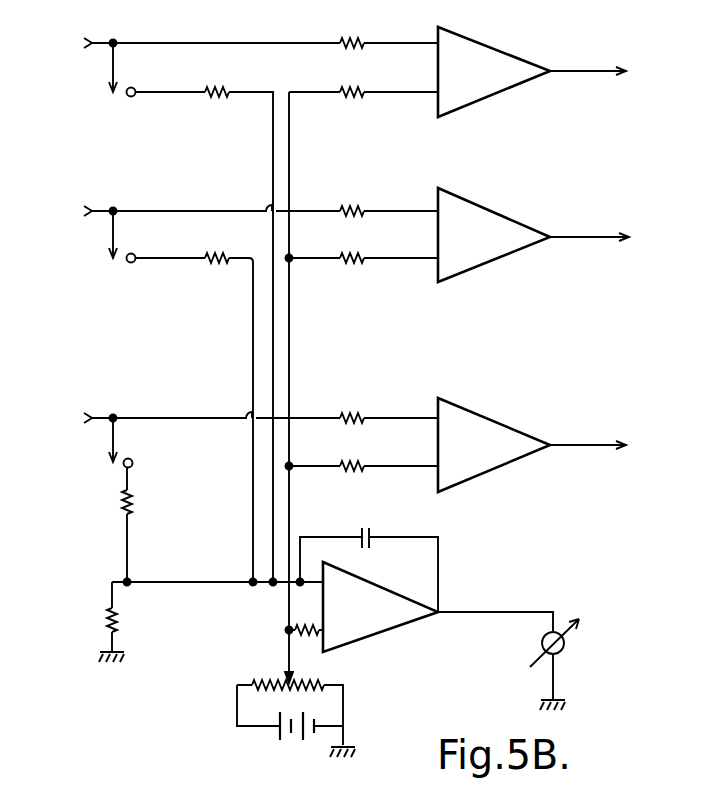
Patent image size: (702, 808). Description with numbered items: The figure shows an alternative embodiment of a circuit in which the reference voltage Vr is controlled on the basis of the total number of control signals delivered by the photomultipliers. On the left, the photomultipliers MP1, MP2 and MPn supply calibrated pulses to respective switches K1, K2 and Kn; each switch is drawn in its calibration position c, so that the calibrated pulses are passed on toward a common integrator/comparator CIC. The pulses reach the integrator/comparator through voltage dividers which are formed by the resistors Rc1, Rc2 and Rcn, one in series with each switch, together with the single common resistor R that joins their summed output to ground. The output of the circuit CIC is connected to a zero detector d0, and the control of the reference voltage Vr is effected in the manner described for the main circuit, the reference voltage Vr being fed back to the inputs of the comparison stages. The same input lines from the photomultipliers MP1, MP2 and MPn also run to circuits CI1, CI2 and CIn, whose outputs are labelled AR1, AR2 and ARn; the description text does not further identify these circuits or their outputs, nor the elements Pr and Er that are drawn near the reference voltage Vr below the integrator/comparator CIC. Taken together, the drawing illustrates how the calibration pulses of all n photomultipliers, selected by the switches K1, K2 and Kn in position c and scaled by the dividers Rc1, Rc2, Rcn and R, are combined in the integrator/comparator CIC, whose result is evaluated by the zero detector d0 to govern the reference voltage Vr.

The photomultiplier MP1 is at (236, 38).
The switch K1 is at (128, 67).
The calibration position c is at (130, 188).
The resistor Rc1 is at (204, 334).
The comparator 1 CI1 is at (419, 66).
The alarm output 1 AR1 is at (595, 85).
The photomultiplier MP2 is at (231, 208).
The switch K2 is at (128, 234).
The resistor Rc2 is at (194, 417).
The comparator 2 CI2 is at (418, 231).
The alarm output 2 AR2 is at (594, 252).
The photomultiplier MPn is at (226, 418).
The switch Kn is at (128, 443).
The resistor Rcn is at (152, 525).
The comparator n CIn is at (418, 440).
The alarm output n ARn is at (595, 461).
The resistor R is at (120, 622).
The integrator/comparator CIC is at (369, 607).
The reference voltage Vr is at (292, 656).
The reference potentiometer Pr is at (300, 700).
The reference battery Er is at (292, 743).
The zero detector d0 is at (544, 649).